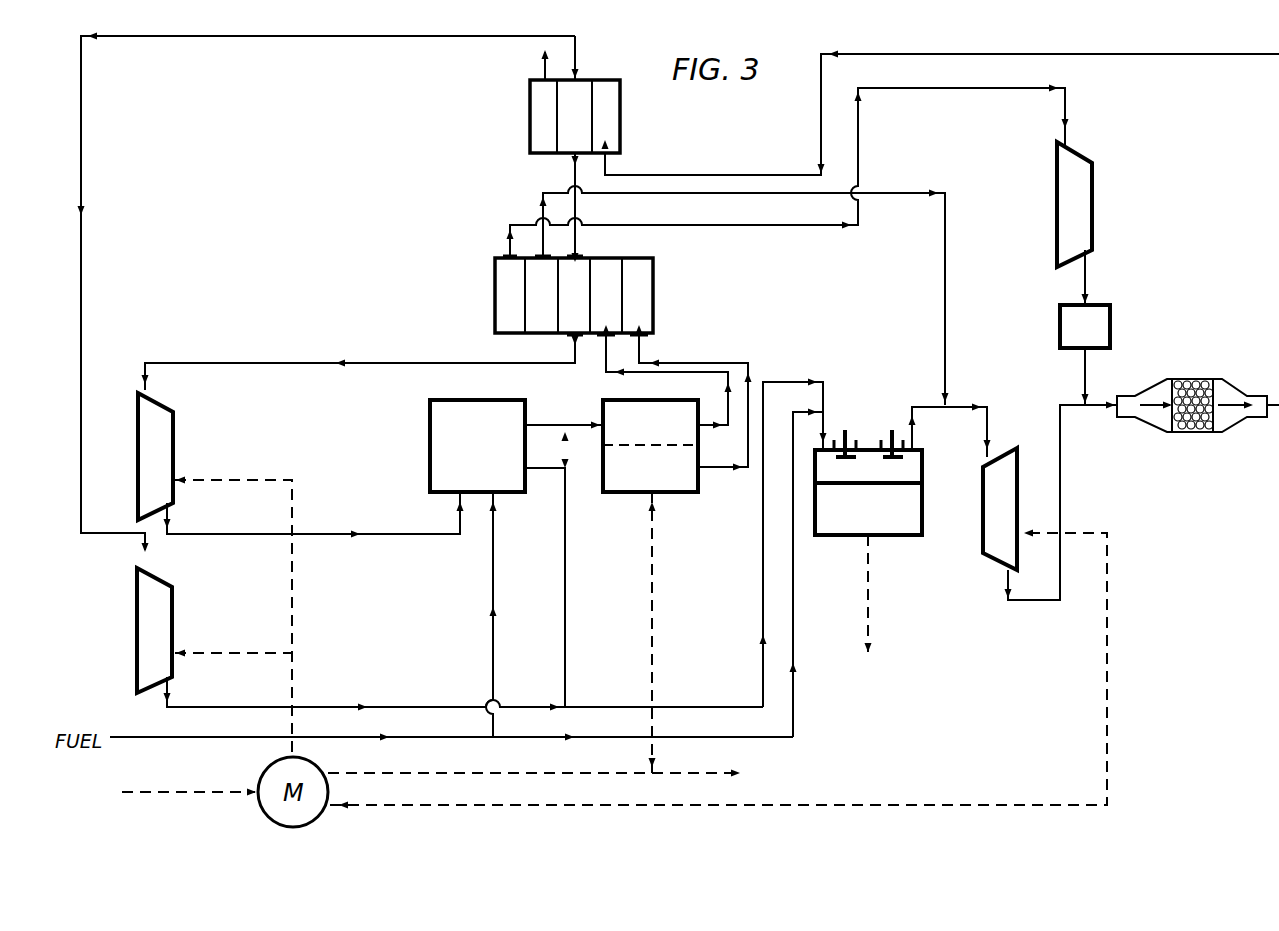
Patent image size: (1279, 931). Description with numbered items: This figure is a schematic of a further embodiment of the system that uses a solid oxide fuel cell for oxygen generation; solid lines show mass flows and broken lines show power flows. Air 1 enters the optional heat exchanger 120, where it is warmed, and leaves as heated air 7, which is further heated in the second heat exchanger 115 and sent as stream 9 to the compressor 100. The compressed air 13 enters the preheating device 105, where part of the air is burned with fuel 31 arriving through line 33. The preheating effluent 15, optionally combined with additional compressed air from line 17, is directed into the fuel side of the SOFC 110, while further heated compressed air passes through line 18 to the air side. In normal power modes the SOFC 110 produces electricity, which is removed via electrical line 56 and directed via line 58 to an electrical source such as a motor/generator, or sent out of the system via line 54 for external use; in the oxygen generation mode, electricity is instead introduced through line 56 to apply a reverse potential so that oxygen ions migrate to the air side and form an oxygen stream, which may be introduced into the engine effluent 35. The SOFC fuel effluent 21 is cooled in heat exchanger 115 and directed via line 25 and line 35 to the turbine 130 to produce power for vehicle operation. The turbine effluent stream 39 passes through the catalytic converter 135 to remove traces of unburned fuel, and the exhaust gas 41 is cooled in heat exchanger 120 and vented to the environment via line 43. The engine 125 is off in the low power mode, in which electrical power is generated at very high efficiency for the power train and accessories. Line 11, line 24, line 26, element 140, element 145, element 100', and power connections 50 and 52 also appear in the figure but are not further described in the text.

The air 1 is at (578, 26).
The vent line 43 is at (540, 63).
The heat exchanger 120 is at (528, 108).
The exhaust gas 41 is at (667, 177).
The heated air 7 is at (577, 243).
The line 25 is at (710, 196).
The nitrogen line 26 is at (700, 228).
The second heat exchanger 115 is at (495, 293).
The heated air stream 9 is at (386, 358).
The SOFC fuel effluent stream 21 is at (724, 399).
The fuel line to engine 11 is at (792, 380).
The expansion turbine 140 is at (1096, 200).
The heat recovery unit 145 is at (1112, 305).
The catalytic converter 135 is at (1190, 378).
The engine effluent line 35 is at (968, 408).
The preheating effluent 15 is at (552, 423).
The compressed air line 17 is at (566, 445).
The preheating device 105 is at (496, 461).
The solid oxide fuel cell 110 is at (620, 497).
The compressor 100 is at (188, 456).
The compressed air 13 is at (414, 532).
The air line 18 is at (545, 469).
The product line 24 is at (713, 470).
The engine 125 is at (889, 517).
The turbine effluent stream 39 is at (1062, 475).
The turbine 130 is at (978, 542).
The second compressor 100' is at (450, 639).
The fuel line 33 is at (485, 572).
The fuel 31 is at (795, 568).
The electrical line 56 is at (652, 628).
The drive shaft 52 is at (295, 676).
The electrical output line 54 is at (397, 773).
The electrical input 50 is at (176, 790).
The electrical line 58 is at (898, 803).